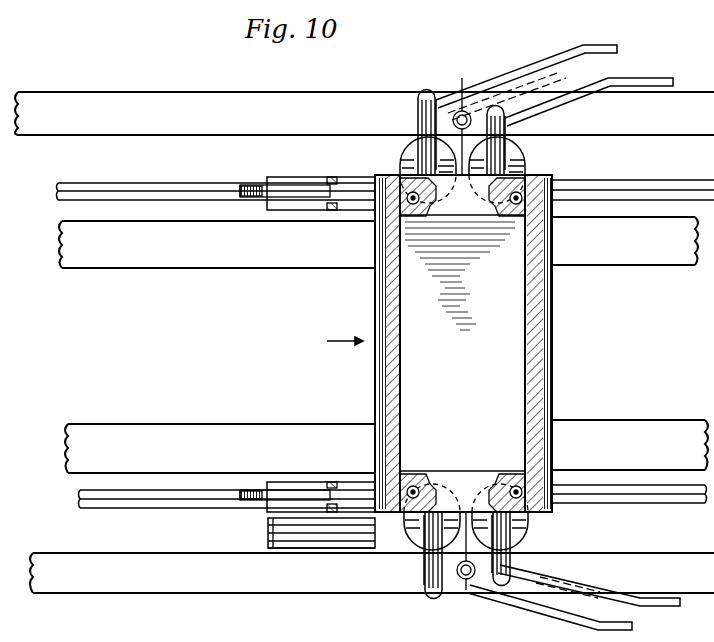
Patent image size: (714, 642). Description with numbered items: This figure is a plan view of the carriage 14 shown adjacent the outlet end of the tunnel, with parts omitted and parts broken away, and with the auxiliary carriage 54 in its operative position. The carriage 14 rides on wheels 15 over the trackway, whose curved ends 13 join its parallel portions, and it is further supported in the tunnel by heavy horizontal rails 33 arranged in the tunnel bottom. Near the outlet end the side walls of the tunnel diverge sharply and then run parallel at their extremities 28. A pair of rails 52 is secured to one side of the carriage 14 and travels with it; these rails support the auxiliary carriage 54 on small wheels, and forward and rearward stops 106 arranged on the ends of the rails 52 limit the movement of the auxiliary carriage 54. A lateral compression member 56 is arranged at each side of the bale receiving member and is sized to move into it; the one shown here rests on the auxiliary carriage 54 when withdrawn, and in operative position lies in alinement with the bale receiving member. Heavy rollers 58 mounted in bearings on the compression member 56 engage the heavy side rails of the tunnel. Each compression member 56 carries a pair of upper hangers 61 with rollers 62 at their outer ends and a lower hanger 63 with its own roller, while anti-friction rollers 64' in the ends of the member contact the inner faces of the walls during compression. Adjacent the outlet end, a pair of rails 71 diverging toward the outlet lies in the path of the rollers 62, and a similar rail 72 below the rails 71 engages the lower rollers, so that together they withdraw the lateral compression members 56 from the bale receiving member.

The curved ends 13 is at (183, 172).
The carriage 14 is at (560, 338).
The wheels 15 is at (284, 194).
The parallel extremities of side walls 28 is at (364, 342).
The rails 33 is at (383, 345).
The rails 52 is at (281, 548).
The auxiliary carriage 54 is at (522, 536).
The lateral compression member 56 is at (464, 343).
The rollers 58 is at (399, 153).
The upper hangers 61 is at (418, 118).
The rollers 62 is at (428, 96).
The lower hanger 63 is at (476, 514).
The anti-friction rollers 64' is at (462, 345).
The rails 71 is at (586, 46).
The rail 72 is at (610, 62).
The stops 106 is at (268, 525).